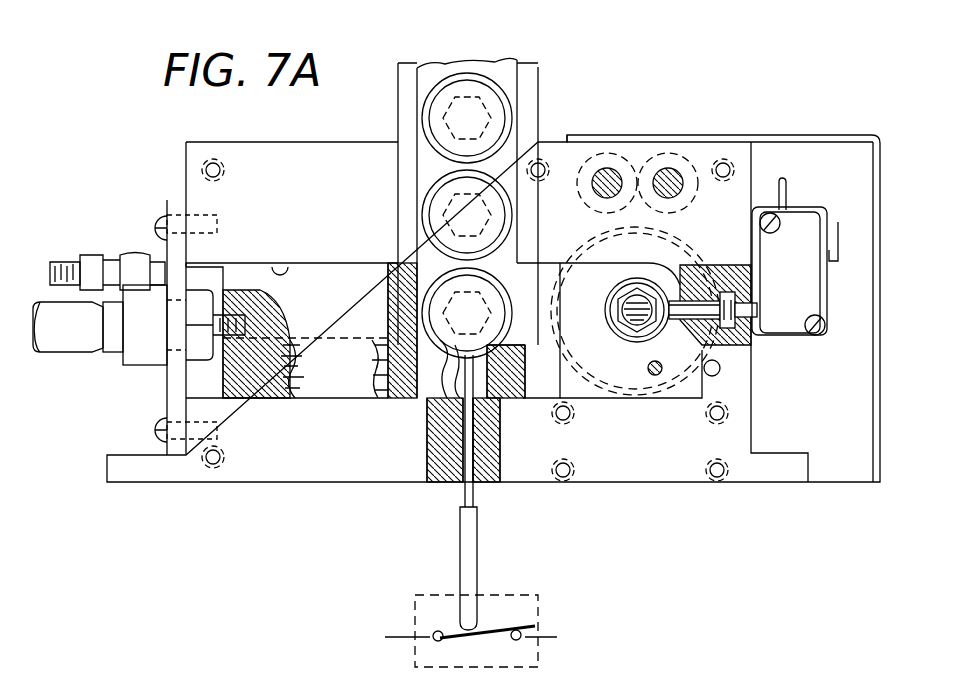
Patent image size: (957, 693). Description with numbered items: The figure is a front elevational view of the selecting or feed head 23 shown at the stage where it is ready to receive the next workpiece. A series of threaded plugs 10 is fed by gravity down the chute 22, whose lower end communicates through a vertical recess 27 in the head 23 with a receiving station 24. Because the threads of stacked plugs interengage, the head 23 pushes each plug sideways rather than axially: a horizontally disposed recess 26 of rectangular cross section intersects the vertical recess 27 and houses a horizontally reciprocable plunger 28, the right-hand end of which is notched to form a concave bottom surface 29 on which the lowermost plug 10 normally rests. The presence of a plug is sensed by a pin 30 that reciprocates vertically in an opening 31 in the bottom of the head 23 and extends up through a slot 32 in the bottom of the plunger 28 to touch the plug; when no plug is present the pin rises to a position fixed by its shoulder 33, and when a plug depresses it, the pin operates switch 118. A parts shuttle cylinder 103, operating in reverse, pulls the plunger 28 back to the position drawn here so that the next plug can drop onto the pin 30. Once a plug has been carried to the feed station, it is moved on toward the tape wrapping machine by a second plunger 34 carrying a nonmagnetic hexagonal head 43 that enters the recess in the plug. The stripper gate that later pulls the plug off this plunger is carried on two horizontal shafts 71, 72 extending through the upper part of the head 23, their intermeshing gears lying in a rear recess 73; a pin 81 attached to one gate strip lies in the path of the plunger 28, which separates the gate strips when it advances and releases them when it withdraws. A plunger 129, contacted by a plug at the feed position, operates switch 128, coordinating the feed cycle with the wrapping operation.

The plug 10 is at (490, 104).
The chute 22 is at (520, 63).
The feed head 23 is at (603, 130).
The receiving station 24 is at (432, 252).
The horizontally disposed recess 26 is at (275, 263).
The vertical recess 27 is at (406, 156).
The plunger 28 is at (329, 299).
The concave bottom surface 29 is at (430, 392).
The pin 30 is at (452, 398).
The opening 31 is at (465, 445).
The slot 32 is at (292, 400).
The shoulder 33 is at (463, 505).
The plunger 34 is at (636, 338).
The head 43 is at (628, 320).
The shaft 71 is at (676, 186).
The shaft 72 is at (600, 186).
The recess 73 is at (690, 170).
The pin 81 is at (655, 378).
The parts shuttle cylinder 103 is at (62, 347).
The switch 118 is at (505, 625).
The switch 128 is at (808, 272).
The plunger 129 is at (692, 305).